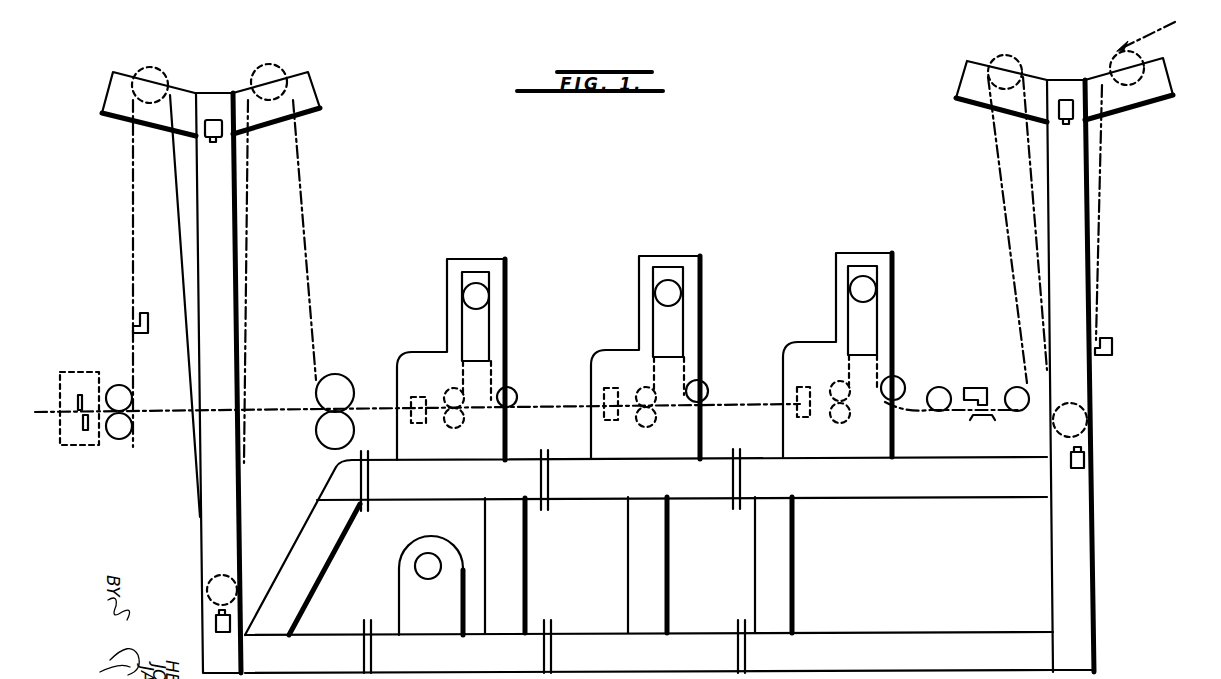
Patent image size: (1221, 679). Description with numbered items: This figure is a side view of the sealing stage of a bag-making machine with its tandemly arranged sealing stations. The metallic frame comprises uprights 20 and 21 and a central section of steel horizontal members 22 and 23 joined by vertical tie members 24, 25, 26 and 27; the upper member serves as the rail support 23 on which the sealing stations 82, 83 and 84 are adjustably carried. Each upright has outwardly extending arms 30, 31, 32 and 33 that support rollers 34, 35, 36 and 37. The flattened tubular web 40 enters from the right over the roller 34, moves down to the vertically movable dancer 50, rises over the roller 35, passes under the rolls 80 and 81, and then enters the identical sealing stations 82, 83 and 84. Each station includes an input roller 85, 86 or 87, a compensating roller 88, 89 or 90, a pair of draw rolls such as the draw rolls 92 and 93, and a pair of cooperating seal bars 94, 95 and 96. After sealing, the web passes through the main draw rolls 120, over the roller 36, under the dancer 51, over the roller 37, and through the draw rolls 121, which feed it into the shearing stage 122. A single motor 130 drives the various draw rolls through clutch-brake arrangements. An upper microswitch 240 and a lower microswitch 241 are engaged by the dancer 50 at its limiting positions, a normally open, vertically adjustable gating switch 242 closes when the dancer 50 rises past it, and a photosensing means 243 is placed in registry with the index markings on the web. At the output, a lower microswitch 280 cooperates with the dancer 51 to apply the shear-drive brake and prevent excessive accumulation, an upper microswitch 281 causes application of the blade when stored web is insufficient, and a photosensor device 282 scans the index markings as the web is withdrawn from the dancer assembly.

The upright 20 is at (1080, 513).
The upright 21 is at (210, 492).
The horizontal member 22 is at (870, 643).
The horizontal member 23 is at (893, 480).
The vertical tie member 24 is at (780, 568).
The vertical tie member 25 is at (660, 570).
The vertical tie member 26 is at (508, 575).
The vertical tie member 27 is at (302, 538).
The arm 30 is at (1148, 93).
The arm 31 is at (975, 105).
The arm 32 is at (318, 88).
The arm 33 is at (110, 95).
The roller 34 is at (1135, 53).
The roller 35 is at (1010, 57).
The roller 36 is at (275, 67).
The roller 37 is at (158, 72).
The web 40 is at (1098, 195).
The dancer 50 is at (1088, 400).
The dancer 51 is at (208, 580).
The roll 80 is at (1017, 388).
The roll 81 is at (948, 379).
The sealing station 82 is at (854, 324).
The sealing station 83 is at (671, 325).
The sealing station 84 is at (480, 327).
The input roller 85 is at (901, 377).
The input roller 86 is at (709, 390).
The input roller 87 is at (520, 392).
The compensating roller 88 is at (878, 282).
The compensating roller 89 is at (680, 283).
The compensating roller 90 is at (490, 284).
The pair of draw rolls 92 is at (655, 413).
The pair of draw rolls 93 is at (460, 416).
The pair of cooperating seal bars 94 is at (805, 385).
The pair of cooperating seal bars 95 is at (625, 380).
The pair of cooperating seal bars 96 is at (421, 396).
The pair of main draw rolls 120 is at (318, 412).
The pair of draw rolls 121 is at (134, 416).
The shearing stage 122 is at (78, 368).
The motor 130 is at (415, 553).
The upper microswitch 240 is at (1090, 460).
The lower microswitch 241 is at (1066, 100).
The gating switch 242 is at (1113, 342).
The photosensing means 243 is at (985, 381).
The lower microswitch 280 is at (215, 622).
The upper microswitch 281 is at (215, 118).
The photosensor device 282 is at (160, 302).